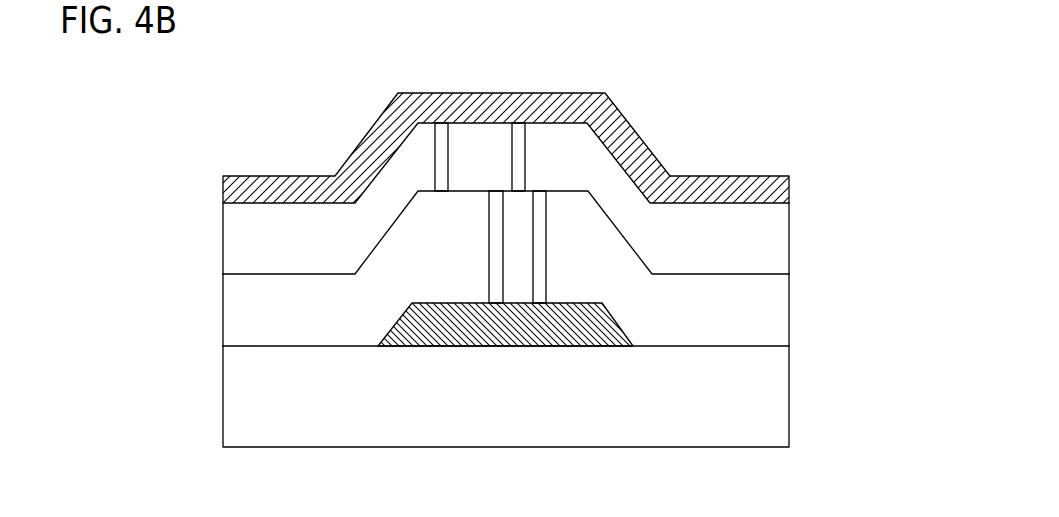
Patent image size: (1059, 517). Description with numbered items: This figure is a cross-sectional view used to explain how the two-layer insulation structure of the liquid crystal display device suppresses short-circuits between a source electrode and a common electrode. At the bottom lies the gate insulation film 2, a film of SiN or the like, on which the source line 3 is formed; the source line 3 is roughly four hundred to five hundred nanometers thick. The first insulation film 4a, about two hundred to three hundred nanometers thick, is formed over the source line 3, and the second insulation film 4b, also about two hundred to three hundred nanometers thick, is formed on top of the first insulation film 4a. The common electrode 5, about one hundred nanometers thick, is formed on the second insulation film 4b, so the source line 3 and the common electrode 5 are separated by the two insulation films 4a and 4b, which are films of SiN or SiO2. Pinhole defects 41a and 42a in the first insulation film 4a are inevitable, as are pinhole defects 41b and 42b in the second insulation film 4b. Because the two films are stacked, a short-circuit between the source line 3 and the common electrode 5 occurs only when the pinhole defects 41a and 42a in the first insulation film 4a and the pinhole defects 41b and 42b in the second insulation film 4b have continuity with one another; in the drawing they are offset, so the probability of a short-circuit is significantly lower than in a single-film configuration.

The gate insulation film 2 is at (777, 404).
The source line 3 is at (620, 328).
The first insulation film 4a is at (773, 316).
The second insulation film 4b is at (777, 257).
The common electrode 5 is at (782, 184).
The pinhole defect 41a is at (498, 273).
The pinhole defect 42a is at (542, 273).
The pinhole defect 41b is at (442, 137).
The pinhole defect 42b is at (520, 137).